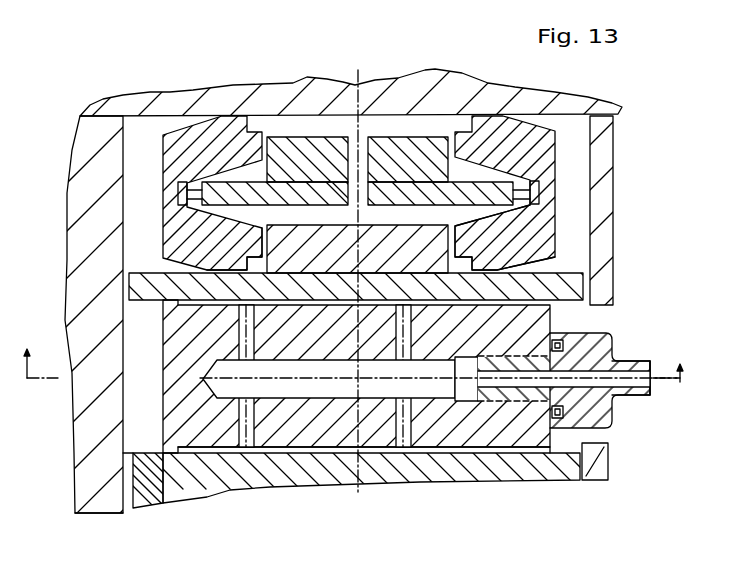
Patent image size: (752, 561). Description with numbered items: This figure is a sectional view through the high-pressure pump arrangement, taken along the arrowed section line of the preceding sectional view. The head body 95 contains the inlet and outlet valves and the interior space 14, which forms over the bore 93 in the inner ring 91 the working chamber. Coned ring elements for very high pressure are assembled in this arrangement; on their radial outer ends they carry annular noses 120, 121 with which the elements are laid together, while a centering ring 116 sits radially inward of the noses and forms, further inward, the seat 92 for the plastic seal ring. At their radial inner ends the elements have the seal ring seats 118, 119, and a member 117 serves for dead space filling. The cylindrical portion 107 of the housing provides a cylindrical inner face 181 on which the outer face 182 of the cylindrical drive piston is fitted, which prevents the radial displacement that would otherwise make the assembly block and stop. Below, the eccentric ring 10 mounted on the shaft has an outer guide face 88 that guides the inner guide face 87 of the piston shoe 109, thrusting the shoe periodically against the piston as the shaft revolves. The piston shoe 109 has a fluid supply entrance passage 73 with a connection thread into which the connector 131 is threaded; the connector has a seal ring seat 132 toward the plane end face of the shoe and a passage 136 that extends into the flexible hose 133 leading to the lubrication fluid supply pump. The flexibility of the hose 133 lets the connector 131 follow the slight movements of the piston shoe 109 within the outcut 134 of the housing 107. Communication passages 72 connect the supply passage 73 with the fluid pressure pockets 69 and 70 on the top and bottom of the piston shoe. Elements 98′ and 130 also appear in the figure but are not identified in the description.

The head body 95 is at (173, 104).
The interior space 14 is at (423, 130).
The cylindrical inner face 181 is at (124, 355).
The cylindrical portion 107 is at (100, 505).
The outer face 182 is at (592, 273).
The seal ring seat 118 is at (251, 126).
The seal ring seat 119 is at (263, 261).
The annular nose 120 is at (178, 187).
The annular nose 121 is at (178, 195).
The centering ring 116 is at (548, 190).
The seat 92 is at (548, 195).
The inner ring 91 is at (281, 199).
The member 117 is at (308, 146).
The bore 93 is at (362, 141).
The rotor body 98′ is at (397, 236).
The fluid pressure pockets 69 is at (185, 305).
The pockets 70 is at (193, 455).
The piston shoe 109 is at (330, 432).
The fluid supply entrance passage 73 is at (310, 388).
The communication passages 72 is at (248, 437).
The shaft head 130 is at (470, 403).
The connector 131 is at (603, 408).
The flexible hose 133 is at (642, 362).
The passage 136 is at (653, 381).
The seal ring seat 132 is at (563, 333).
The eccentric ring 10 is at (507, 473).
The inner guide face 87 is at (162, 504).
The outer guide face 88 is at (147, 453).
The outcut 134 is at (597, 435).